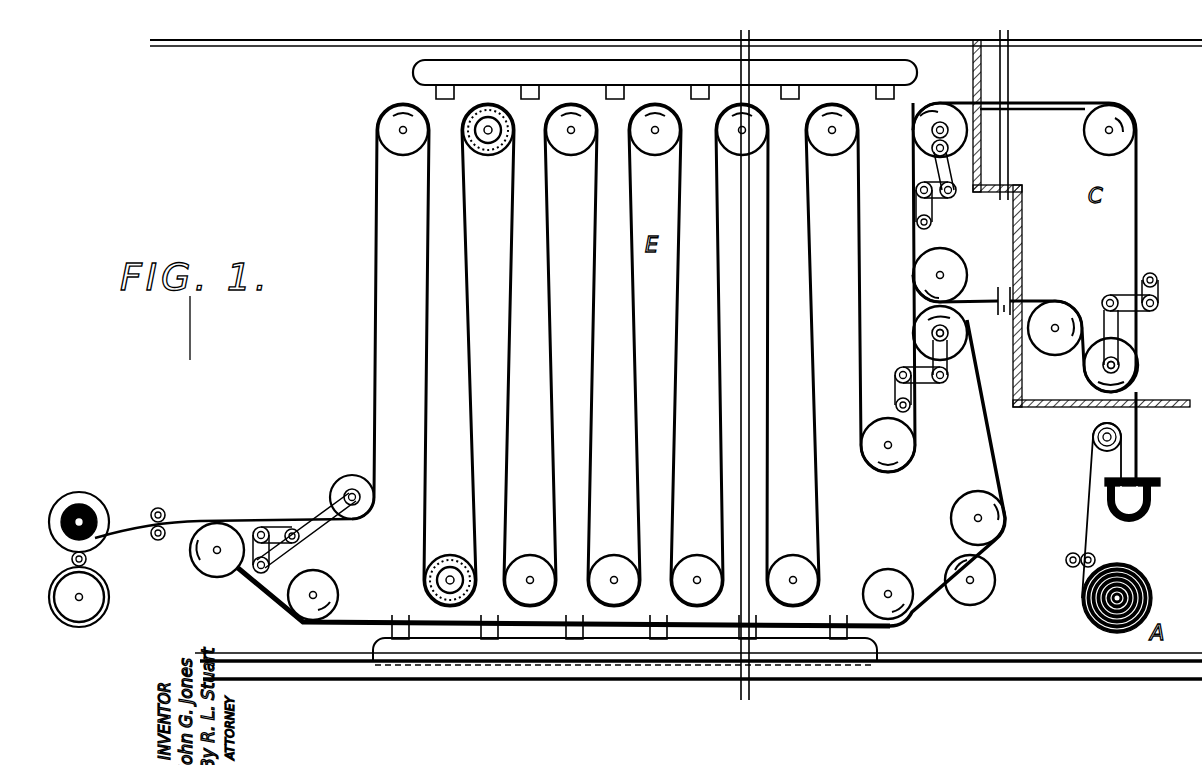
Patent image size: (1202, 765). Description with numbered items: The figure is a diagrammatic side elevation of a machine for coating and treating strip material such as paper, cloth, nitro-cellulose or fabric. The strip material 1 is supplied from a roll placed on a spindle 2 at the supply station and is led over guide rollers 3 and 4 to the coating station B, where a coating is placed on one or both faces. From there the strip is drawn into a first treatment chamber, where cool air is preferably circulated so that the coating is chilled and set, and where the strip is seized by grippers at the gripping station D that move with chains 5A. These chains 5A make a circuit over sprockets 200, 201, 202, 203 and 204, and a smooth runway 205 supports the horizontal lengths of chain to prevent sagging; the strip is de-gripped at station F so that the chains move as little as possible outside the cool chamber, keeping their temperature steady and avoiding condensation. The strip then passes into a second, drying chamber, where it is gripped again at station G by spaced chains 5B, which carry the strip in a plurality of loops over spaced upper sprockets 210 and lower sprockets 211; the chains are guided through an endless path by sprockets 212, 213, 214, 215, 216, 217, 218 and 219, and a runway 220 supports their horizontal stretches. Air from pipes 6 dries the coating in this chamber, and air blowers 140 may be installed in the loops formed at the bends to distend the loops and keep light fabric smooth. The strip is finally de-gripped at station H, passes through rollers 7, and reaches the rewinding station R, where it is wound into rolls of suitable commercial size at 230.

The strip material 1 is at (1082, 538).
The spindle 2 is at (1115, 598).
The guide roller 3 is at (1090, 552).
The guide roller 4 is at (1093, 437).
The chains 5A is at (912, 242).
The spaced chains 5B is at (510, 190).
The pipes 6 is at (890, 640).
The rollers 7 is at (166, 521).
The air blowers 140 is at (500, 140).
The sprocket 200 is at (1138, 374).
The sprocket 201 is at (1090, 140).
The sprocket 202 is at (930, 140).
The sprocket 203 is at (952, 262).
The sprocket 204 is at (1063, 315).
The runway 205 is at (1053, 110).
The upper sprockets 210 is at (404, 110).
The lower sprockets 211 is at (412, 627).
The sprocket 212 is at (340, 488).
The sprocket 213 is at (208, 570).
The sprocket 214 is at (340, 596).
The sprocket 215 is at (892, 578).
The sprocket 216 is at (968, 598).
The sprocket 217 is at (968, 505).
The sprocket 218 is at (967, 330).
The sprocket 219 is at (913, 458).
The runway 220 is at (600, 657).
The rolls 230 is at (88, 512).
The coating station B is at (1141, 498).
The gripping station D is at (1138, 319).
The de-gripping station F is at (920, 190).
The gripping station G is at (909, 376).
The de-gripping station H is at (304, 533).
The rewinding station R is at (92, 564).